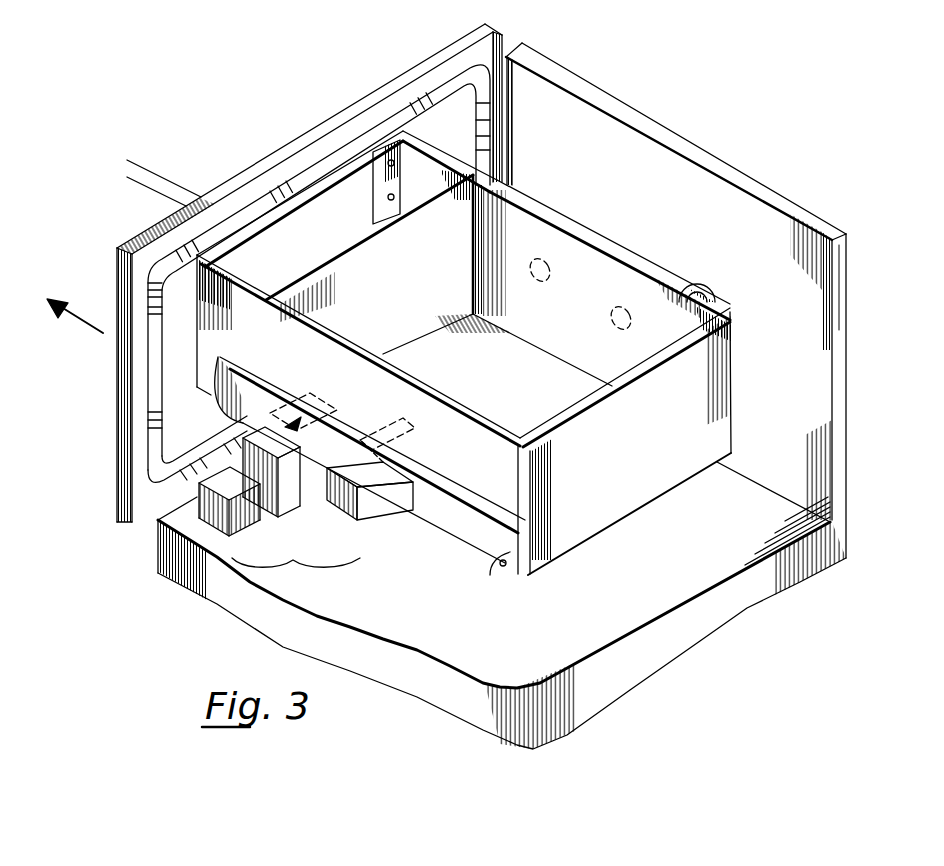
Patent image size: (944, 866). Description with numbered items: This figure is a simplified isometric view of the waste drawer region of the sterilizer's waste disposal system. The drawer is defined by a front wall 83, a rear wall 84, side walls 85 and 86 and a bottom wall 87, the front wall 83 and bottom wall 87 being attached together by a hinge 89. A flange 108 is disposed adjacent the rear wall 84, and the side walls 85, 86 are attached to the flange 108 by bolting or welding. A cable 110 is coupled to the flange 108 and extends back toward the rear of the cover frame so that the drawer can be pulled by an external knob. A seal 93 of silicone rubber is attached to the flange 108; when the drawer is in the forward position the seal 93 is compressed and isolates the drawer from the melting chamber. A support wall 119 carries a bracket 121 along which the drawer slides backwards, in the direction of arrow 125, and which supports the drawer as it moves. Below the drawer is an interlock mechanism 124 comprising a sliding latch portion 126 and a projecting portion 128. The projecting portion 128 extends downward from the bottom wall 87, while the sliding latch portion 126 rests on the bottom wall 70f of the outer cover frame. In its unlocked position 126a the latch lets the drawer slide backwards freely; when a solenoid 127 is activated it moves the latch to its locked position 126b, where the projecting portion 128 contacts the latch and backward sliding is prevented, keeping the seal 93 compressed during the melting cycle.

The bottom wall of outer cover frame 70f is at (640, 568).
The front wall 83 is at (621, 452).
The rear wall 84 is at (378, 284).
The side wall 85 is at (240, 339).
The side wall 86 is at (411, 190).
The bottom wall 87 is at (441, 526).
The hinge 89 is at (507, 572).
The seal 93 is at (152, 368).
The flange 108 is at (133, 238).
The cable 110 is at (155, 172).
The support wall 119 is at (756, 294).
The bracket 121 is at (613, 233).
The interlock mechanism 124 is at (296, 574).
The arrow 125 is at (84, 328).
The sliding latch portion 126 is at (288, 498).
The unlocked position 126a is at (295, 465).
The locked position 126b is at (305, 425).
The solenoid 127 is at (229, 501).
The projecting portion 128 is at (347, 508).